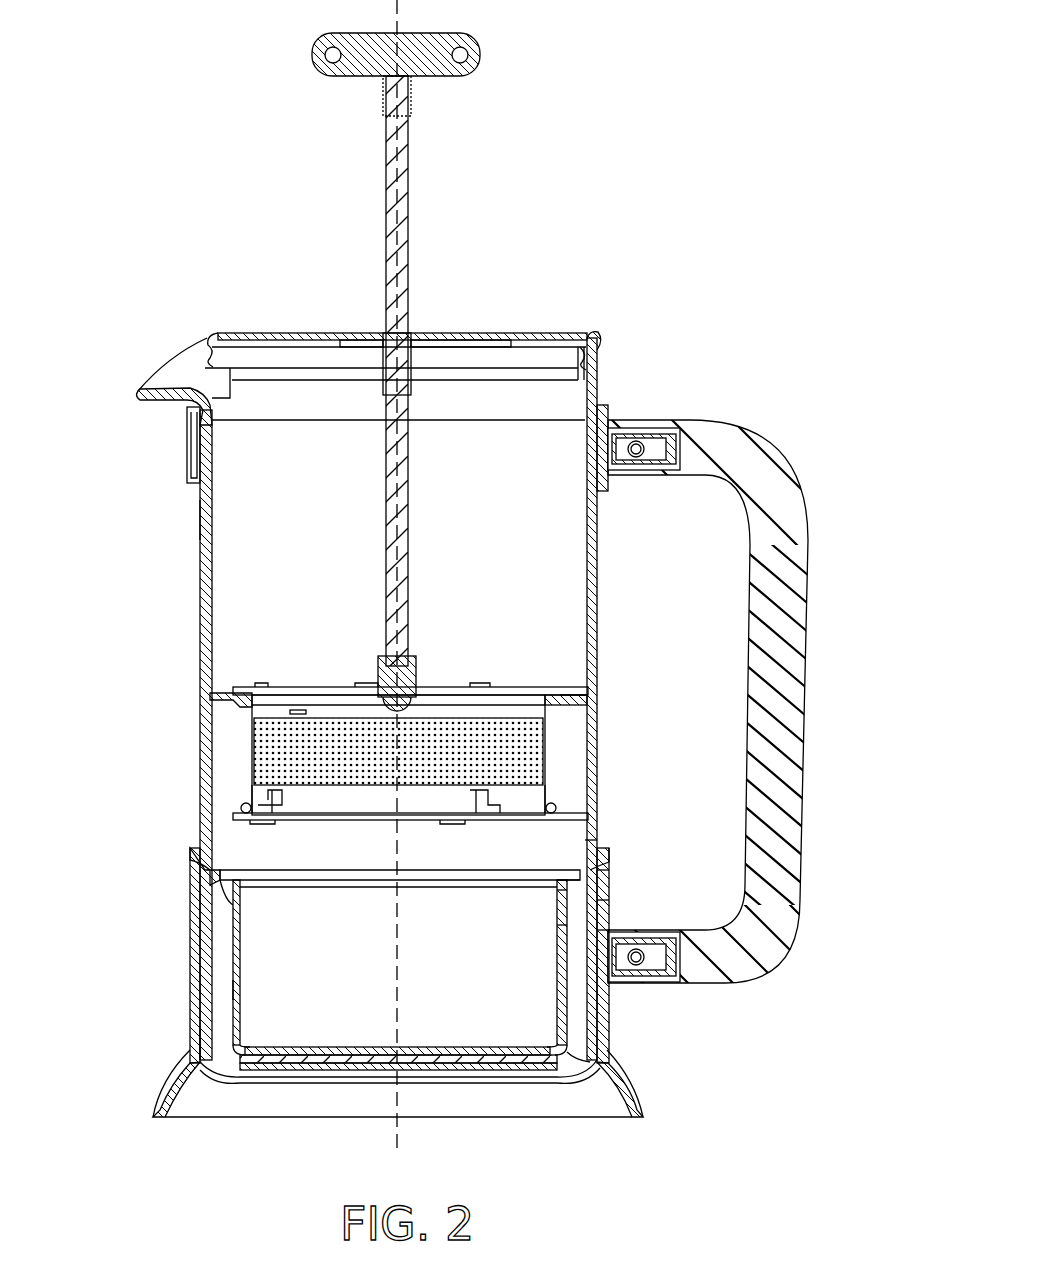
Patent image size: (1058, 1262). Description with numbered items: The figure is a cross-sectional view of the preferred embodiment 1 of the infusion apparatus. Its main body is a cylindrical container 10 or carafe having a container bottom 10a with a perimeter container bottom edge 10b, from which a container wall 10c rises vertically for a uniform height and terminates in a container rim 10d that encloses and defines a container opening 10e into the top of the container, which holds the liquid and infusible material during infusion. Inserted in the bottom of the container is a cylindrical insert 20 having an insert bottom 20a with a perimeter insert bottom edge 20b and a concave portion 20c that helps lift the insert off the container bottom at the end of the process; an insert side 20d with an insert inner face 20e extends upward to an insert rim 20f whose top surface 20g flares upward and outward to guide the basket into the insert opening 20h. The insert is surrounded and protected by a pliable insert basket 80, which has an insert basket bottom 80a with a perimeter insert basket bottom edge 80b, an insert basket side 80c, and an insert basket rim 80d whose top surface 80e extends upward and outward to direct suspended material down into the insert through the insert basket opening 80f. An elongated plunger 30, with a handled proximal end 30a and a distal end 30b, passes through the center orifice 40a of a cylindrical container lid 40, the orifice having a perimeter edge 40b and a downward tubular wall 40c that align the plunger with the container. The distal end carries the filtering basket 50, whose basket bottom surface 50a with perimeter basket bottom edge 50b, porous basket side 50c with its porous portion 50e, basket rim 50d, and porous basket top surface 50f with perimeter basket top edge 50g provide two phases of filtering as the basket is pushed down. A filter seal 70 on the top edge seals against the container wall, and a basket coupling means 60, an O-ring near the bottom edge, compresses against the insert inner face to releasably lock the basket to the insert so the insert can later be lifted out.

The coffee press 1 is at (520, 583).
The cylindrical container 10 is at (401, 718).
The container bottom 10a is at (380, 1070).
The perimeter container bottom edge 10b is at (200, 1040).
The container wall 10c is at (205, 512).
The container rim 10d is at (596, 340).
The container opening 10e is at (460, 385).
The cylindrical insert 20 is at (423, 974).
The insert bottom 20a is at (430, 1085).
The perimeter insert bottom edge 20b is at (600, 1060).
The concave portion 20c is at (410, 1080).
The insert side 20d is at (235, 990).
The insert inner face 20e is at (545, 925).
The insert rim 20f is at (540, 890).
The top surface 20g is at (530, 885).
The insert opening 20h is at (235, 882).
The elongated plunger 30 is at (309, 372).
The proximal end 30a is at (388, 96).
The distal end 30b is at (385, 662).
The cylindrical container lid 40 is at (396, 348).
The center orifice 40a is at (410, 345).
The perimeter edge 40b is at (462, 338).
The tubular wall 40c is at (390, 345).
The filtering basket 50 is at (398, 697).
The basket bottom surface 50a is at (360, 822).
The perimeter basket bottom edge 50b is at (270, 810).
The porous basket side 50c is at (350, 740).
The basket rim 50d is at (240, 700).
The porous portion 50e is at (300, 765).
The porous basket top surface 50f is at (500, 660).
The perimeter basket top edge 50g is at (560, 690).
The basket coupling means 60 is at (560, 790).
The filter seal 70 is at (560, 700).
The pliable insert basket 80 is at (430, 963).
The insert basket bottom 80a is at (250, 1100).
The perimeter insert basket bottom edge 80b is at (205, 1095).
The insert basket side 80c is at (600, 942).
The insert basket rim 80d is at (580, 910).
The top surface 80e is at (520, 880).
The insert basket opening 80f is at (540, 835).